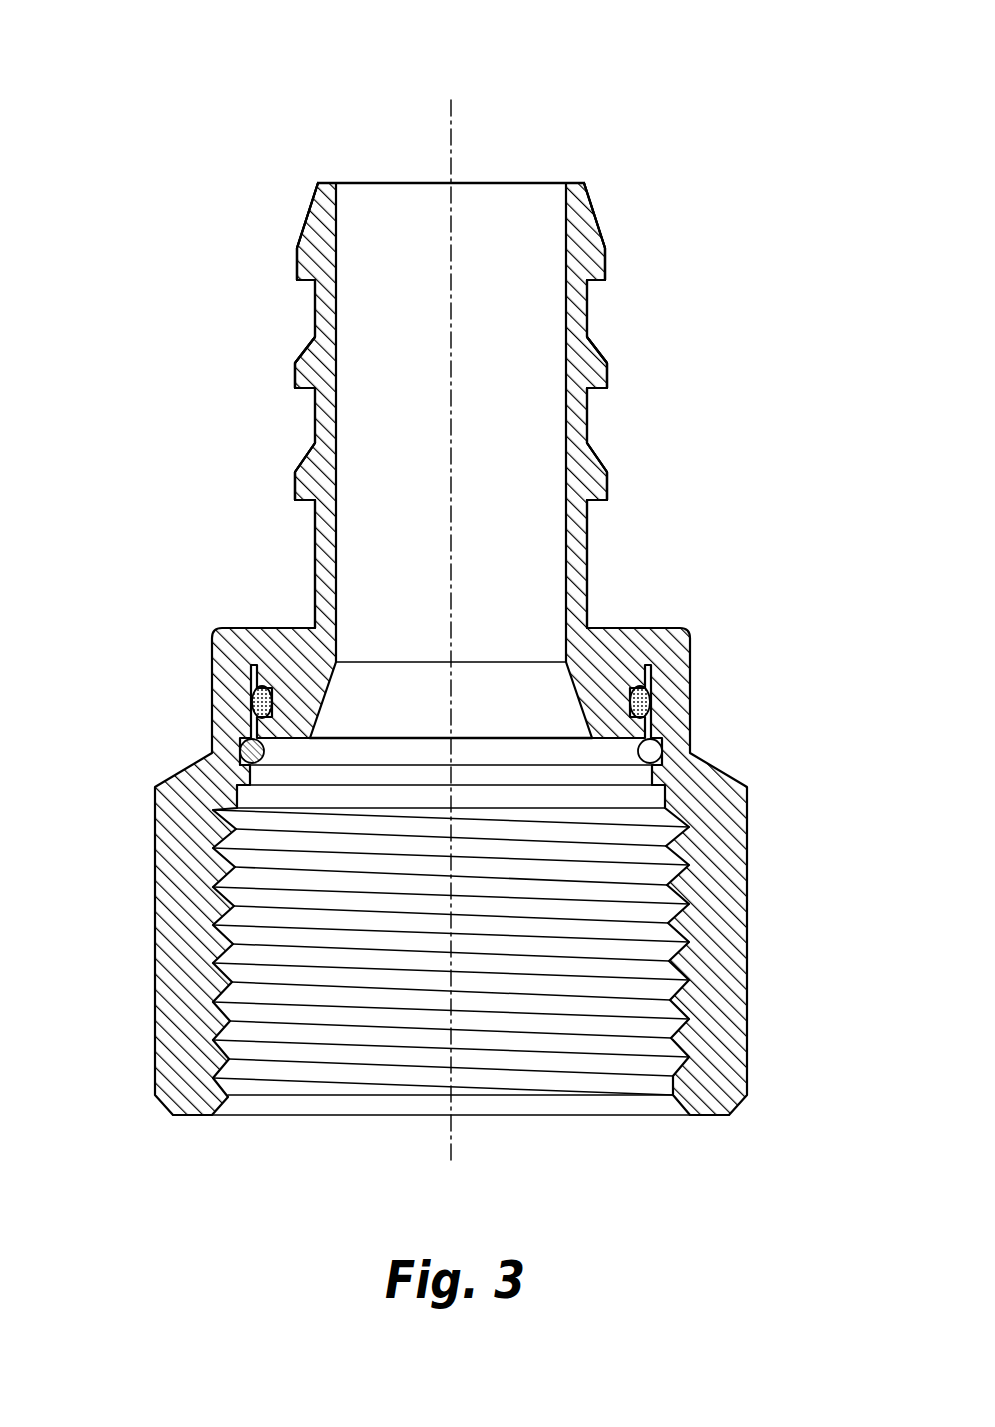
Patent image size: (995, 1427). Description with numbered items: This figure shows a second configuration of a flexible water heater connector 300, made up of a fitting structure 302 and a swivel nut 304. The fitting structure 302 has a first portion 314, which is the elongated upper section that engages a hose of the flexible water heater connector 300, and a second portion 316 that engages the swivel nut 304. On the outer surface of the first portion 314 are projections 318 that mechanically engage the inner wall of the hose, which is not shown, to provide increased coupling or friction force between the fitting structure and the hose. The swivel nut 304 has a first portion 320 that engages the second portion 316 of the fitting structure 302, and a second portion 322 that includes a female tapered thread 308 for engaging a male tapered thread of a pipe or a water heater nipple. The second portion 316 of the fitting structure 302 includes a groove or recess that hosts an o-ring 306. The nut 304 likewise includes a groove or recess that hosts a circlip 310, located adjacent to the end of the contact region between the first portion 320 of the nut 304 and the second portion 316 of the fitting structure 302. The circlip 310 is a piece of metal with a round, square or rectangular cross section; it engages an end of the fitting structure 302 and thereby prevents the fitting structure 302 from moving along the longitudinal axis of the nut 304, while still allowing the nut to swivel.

The flexible water heater connector 300 is at (652, 93).
The fitting structure 302 is at (592, 215).
The swivel nut 304 is at (745, 965).
The o-ring 306 is at (655, 704).
The female tapered thread 308 is at (673, 1012).
The circlip 310 is at (637, 753).
The first portion of the fitting structure 314 is at (345, 185).
The second portion of the fitting structure 316 is at (345, 629).
The projections 318 is at (605, 470).
The first portion of the nut 320 is at (136, 631).
The second portion of the nut 322 is at (136, 783).